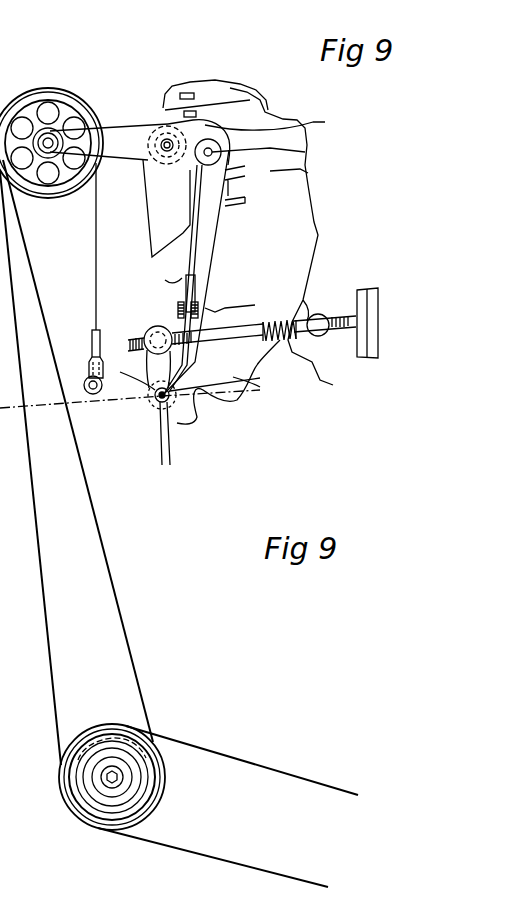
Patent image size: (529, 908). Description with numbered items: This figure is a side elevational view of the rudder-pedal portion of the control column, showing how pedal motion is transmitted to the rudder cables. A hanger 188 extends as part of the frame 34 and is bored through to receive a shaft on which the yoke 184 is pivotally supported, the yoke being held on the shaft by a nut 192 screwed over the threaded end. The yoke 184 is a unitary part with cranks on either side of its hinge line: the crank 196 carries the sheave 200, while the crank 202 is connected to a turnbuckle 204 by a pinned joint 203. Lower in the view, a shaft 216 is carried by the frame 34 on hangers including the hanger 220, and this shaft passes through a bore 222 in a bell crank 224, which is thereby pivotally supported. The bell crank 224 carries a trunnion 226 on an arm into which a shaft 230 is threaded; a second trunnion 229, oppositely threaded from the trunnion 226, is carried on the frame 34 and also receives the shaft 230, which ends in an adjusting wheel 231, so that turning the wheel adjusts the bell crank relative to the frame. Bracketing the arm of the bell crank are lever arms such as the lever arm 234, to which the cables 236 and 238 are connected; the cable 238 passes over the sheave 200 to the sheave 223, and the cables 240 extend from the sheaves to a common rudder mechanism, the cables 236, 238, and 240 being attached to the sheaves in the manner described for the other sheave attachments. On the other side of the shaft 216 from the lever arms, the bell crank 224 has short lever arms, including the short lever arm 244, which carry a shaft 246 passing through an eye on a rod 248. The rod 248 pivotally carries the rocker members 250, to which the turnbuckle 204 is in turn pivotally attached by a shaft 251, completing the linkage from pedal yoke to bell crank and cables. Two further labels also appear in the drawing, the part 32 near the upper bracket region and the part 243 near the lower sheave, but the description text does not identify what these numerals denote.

The sheave 200 is at (24, 100).
The crank 196 is at (113, 124).
The bracket 32 is at (200, 85).
The hanger 188 is at (160, 128).
The nut 192 is at (172, 142).
The frame 34 is at (248, 118).
The crank 202 is at (306, 122).
The pinned joint 203 is at (308, 173).
The yoke 184 is at (160, 228).
The turnbuckle 204 is at (195, 253).
The cable 238 is at (120, 604).
The rocker member 250 is at (183, 300).
The shaft 251 is at (205, 318).
The trunnion 226 is at (158, 326).
The adjusting wheel 231 is at (378, 300).
The bore 222 is at (160, 392).
The rod 248 is at (200, 342).
The second trunnion 229 is at (310, 365).
The lever arm 234 is at (112, 398).
The shaft 230 is at (270, 370).
The hanger 220 is at (172, 408).
The bell crank 224 is at (150, 402).
The short lever arm 244 is at (180, 412).
The shaft 216 is at (160, 448).
The shaft 246 is at (172, 410).
The cable 236 is at (48, 636).
The sheave 223 is at (108, 724).
The pulley hub 243 is at (38, 754).
The cables 240 is at (207, 757).